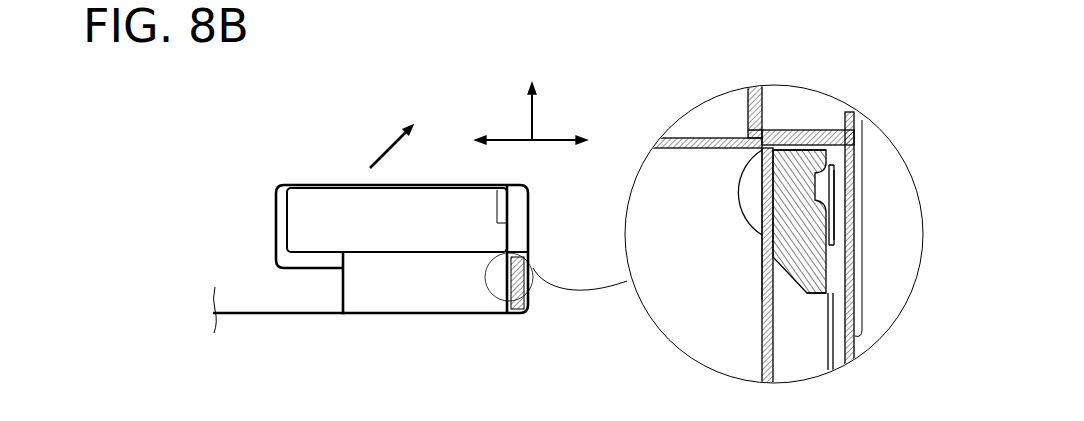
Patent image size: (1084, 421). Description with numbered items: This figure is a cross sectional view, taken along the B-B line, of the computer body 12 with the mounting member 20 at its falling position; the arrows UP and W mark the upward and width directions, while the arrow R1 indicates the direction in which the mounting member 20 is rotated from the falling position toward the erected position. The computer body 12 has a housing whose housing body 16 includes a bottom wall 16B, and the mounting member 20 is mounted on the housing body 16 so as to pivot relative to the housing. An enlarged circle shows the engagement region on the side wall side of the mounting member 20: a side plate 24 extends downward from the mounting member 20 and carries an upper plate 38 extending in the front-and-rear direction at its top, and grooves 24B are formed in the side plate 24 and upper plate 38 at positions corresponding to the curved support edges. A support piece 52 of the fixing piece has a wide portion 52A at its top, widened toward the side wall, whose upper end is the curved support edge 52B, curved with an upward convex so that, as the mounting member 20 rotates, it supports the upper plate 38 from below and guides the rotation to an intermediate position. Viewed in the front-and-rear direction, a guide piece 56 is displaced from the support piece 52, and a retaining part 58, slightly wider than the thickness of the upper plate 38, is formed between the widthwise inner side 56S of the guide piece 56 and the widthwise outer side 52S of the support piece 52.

The computer body 12 is at (427, 146).
The housing body 16 is at (278, 317).
The bottom wall 16B is at (395, 300).
The mounting member 20 is at (320, 184).
The side plate 24 is at (762, 357).
The groove 24B is at (762, 234).
The upper plate 38 is at (770, 104).
The support piece 52 is at (773, 258).
The wide portion 52A is at (856, 170).
The curved support edge 52B is at (833, 165).
The widthwise outer side of the support piece 52S is at (765, 232).
The guide piece 56 is at (841, 214).
The widthwise inner side of the guide piece 56S is at (838, 191).
The retaining part 58 is at (806, 292).
The rotation direction arrow R1 is at (380, 137).
The upward direction UP is at (543, 98).
The width direction W is at (549, 133).